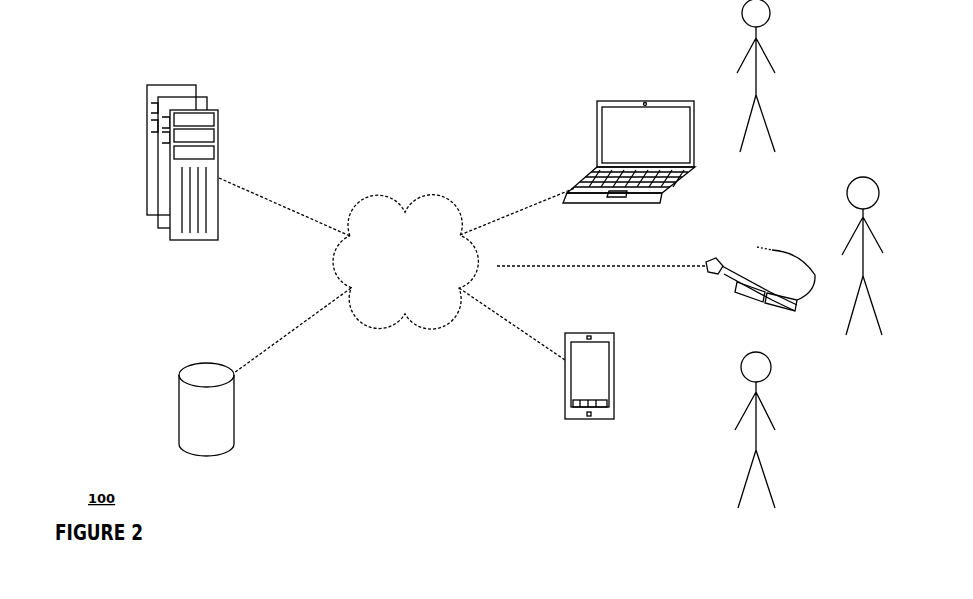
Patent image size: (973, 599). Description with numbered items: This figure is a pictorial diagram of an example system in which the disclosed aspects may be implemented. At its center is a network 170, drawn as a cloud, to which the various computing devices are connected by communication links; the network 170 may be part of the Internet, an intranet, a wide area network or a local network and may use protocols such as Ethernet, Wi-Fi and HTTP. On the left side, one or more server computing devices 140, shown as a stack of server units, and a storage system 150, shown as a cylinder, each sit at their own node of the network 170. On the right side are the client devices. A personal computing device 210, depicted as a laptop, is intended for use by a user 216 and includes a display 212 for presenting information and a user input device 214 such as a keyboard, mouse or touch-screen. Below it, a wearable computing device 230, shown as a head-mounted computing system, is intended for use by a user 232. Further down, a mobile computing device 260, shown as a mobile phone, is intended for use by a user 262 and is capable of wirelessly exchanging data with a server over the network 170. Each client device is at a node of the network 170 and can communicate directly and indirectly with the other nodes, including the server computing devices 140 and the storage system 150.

The server computing devices 140 is at (219, 129).
The storage system 150 is at (237, 422).
The network 170 is at (405, 262).
The personal computing device 210 is at (634, 151).
The display 212 is at (607, 143).
The user input device 214 is at (667, 188).
The user 216 is at (765, 52).
The wearable computing device 230 is at (772, 250).
The user 232 is at (873, 238).
The mobile computing device 260 is at (615, 348).
The user 262 is at (768, 417).